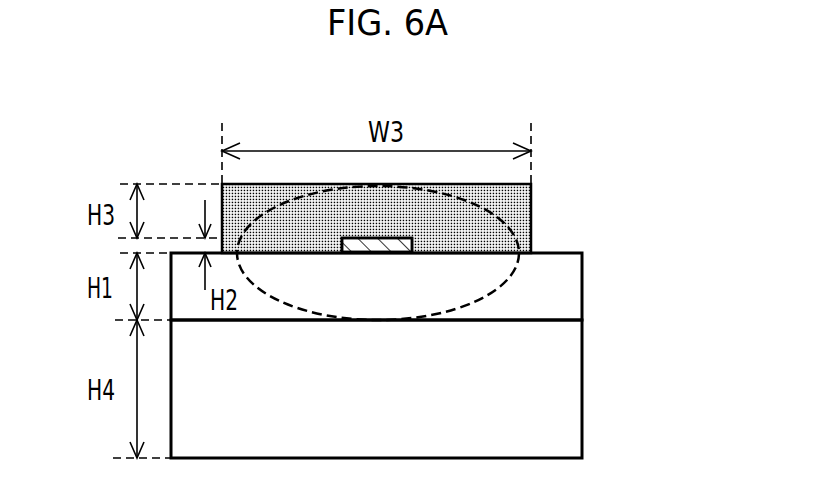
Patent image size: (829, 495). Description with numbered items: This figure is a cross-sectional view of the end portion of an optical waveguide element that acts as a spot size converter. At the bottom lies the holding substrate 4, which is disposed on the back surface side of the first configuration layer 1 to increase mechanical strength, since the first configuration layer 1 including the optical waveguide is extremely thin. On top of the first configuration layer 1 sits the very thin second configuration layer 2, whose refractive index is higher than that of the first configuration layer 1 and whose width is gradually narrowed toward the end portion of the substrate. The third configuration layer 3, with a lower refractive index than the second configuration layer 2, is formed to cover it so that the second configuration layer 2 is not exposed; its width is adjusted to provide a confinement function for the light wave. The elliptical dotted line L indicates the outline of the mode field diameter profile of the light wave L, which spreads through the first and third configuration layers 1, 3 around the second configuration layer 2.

The first configuration layer 1 is at (557, 292).
The second configuration layer 2 is at (361, 254).
The third configuration layer 3 is at (522, 207).
The holding substrate 4 is at (557, 387).
The light wave L is at (469, 302).